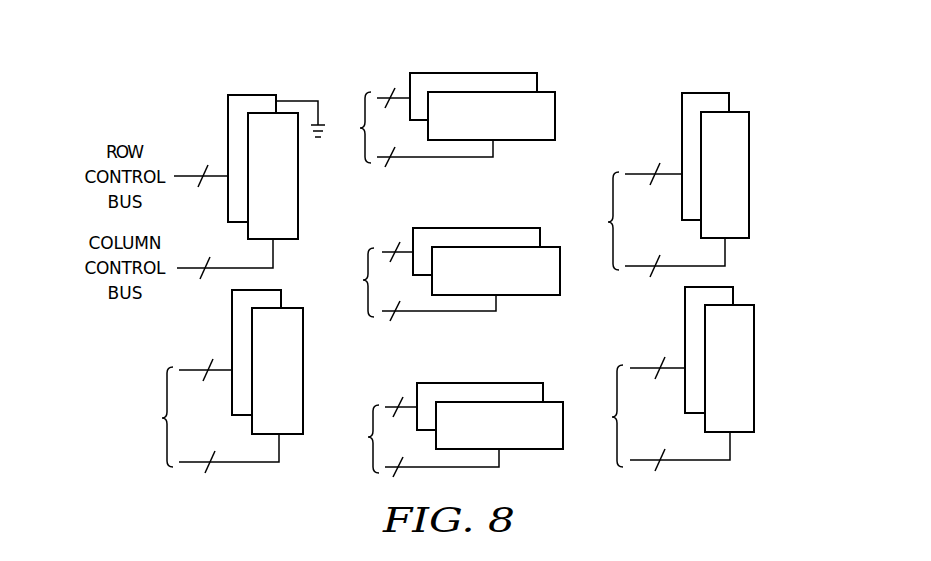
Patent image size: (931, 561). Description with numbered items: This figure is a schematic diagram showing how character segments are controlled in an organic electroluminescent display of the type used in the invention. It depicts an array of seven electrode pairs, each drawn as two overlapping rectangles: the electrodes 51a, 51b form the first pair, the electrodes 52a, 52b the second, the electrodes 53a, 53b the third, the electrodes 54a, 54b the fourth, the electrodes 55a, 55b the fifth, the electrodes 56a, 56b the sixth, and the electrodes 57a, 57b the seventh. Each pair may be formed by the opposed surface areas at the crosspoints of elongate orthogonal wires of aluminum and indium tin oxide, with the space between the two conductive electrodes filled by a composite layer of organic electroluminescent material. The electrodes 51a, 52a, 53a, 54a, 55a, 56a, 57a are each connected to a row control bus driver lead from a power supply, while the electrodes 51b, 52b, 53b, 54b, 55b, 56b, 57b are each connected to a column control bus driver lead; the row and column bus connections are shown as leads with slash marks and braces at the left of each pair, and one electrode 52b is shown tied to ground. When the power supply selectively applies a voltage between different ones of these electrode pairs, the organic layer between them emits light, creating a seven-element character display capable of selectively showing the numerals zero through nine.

The electrode 51a is at (303, 375).
The electrode 51b is at (232, 330).
The electrode 52a is at (298, 192).
The electrode 52b is at (241, 95).
The electrode 53a is at (555, 113).
The electrode 53b is at (503, 72).
The electrode 54a is at (527, 295).
The electrode 54b is at (498, 227).
The electrode 55a is at (540, 450).
The electrode 55b is at (445, 380).
The electrode 56a is at (749, 193).
The electrode 56b is at (712, 92).
The electrode 57a is at (754, 377).
The electrode 57b is at (685, 327).